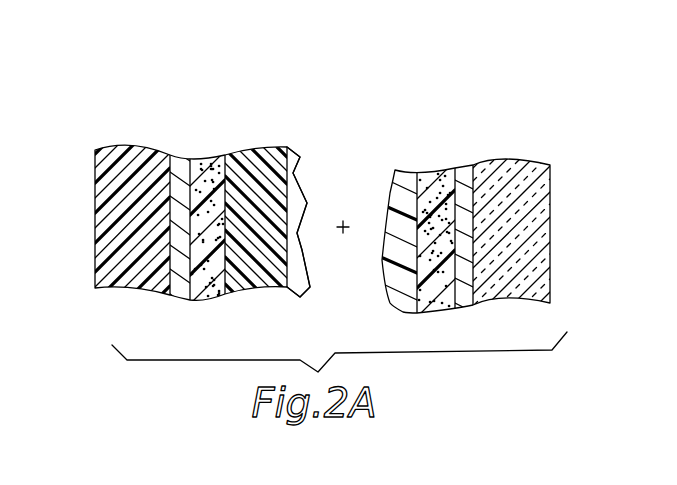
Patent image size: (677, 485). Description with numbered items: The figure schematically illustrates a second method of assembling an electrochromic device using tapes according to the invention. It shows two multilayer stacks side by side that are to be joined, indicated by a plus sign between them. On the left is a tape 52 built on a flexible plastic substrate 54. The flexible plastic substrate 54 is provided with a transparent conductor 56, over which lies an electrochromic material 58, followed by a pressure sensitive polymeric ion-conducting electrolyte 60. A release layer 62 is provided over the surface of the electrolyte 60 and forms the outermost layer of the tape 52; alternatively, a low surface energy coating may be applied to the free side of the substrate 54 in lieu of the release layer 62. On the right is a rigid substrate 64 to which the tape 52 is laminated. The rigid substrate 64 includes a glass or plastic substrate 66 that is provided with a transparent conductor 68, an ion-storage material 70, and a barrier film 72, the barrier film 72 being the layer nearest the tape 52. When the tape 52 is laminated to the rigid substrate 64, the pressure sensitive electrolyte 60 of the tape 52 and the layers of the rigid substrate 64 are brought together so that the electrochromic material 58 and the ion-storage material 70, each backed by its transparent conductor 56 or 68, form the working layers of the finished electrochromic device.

The tape 52 is at (205, 196).
The flexible plastic substrate 54 is at (130, 160).
The transparent conductor 56 is at (180, 287).
The electrochromic material 58 is at (208, 170).
The pressure sensitive polymeric ion-conducting electrolyte 60 is at (252, 167).
The release layer 62 is at (297, 157).
The rigid substrate 64 is at (516, 211).
The glass or plastic substrate 66 is at (550, 192).
The transparent conductor 68 is at (463, 168).
The ion-storage material 70 is at (432, 173).
The barrier film 72 is at (405, 167).